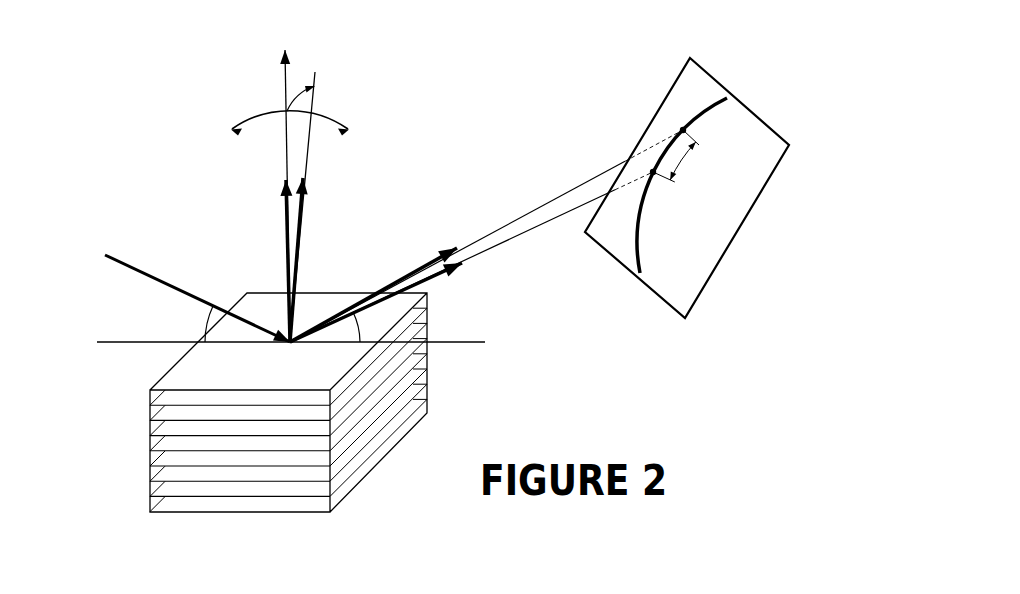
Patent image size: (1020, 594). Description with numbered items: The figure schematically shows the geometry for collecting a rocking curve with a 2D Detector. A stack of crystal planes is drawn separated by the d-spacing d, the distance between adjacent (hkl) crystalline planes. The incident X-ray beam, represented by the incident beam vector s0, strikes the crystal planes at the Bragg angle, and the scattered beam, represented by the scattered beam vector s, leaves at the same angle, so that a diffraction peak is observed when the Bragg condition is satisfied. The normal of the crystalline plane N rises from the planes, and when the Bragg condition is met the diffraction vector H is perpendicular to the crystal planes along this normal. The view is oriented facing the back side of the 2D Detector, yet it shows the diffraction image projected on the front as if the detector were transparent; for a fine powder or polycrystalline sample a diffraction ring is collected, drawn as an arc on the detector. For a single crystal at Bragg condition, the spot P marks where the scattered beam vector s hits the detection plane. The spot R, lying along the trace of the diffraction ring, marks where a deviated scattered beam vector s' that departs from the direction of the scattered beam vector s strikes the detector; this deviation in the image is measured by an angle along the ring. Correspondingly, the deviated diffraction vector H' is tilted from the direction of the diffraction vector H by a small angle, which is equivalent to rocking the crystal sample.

The d-spacing d is at (102, 390).
The incident X-ray beam vector s0 is at (197, 295).
The normal of the crystalline plane N is at (298, 179).
The diffraction vector H is at (262, 240).
The deviated diffraction vector H' is at (328, 207).
The deviated scattered X-ray beam vector s' is at (486, 236).
The scattered beam vector s is at (471, 257).
The 2D detector 2D Detector is at (687, 177).
The spot R is at (683, 126).
The spot P is at (662, 184).